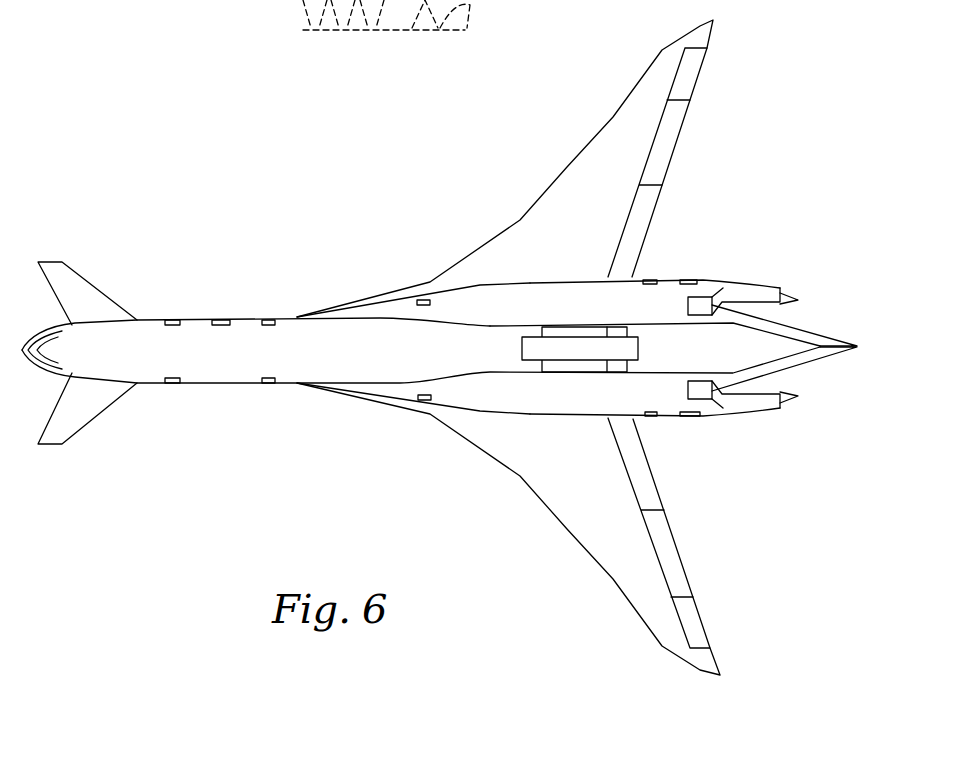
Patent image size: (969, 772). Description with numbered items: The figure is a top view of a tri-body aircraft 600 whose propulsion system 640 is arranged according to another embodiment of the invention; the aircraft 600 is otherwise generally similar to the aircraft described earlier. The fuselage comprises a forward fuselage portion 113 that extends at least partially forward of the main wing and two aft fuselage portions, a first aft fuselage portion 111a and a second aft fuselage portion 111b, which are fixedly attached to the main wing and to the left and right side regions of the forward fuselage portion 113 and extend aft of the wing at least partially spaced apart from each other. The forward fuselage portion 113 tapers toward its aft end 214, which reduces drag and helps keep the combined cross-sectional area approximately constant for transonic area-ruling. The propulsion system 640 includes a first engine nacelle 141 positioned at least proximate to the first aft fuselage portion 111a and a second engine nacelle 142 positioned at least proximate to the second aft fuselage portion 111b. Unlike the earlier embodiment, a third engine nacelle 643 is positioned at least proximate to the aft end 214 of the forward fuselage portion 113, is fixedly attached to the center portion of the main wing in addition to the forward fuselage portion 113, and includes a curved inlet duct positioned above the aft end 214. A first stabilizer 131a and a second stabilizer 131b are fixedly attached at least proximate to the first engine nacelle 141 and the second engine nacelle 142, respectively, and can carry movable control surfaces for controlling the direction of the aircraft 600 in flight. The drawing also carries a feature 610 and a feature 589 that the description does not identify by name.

The aircraft 600 is at (243, 196).
The wing root fairings 610 is at (482, 418).
The propulsion system 640 is at (666, 387).
The third engine nacelle 643 is at (573, 361).
The aft end 214 is at (538, 318).
The forward fuselage portion 113 is at (153, 318).
The first aft fuselage portion 111a is at (667, 419).
The second aft fuselage portion 111b is at (664, 279).
The first engine nacelle 141 is at (733, 416).
The second engine nacelle 142 is at (706, 290).
The first stabilizer 131a is at (828, 369).
The second stabilizer 131b is at (829, 322).
The pressure distribution sketch 589 is at (467, 13).